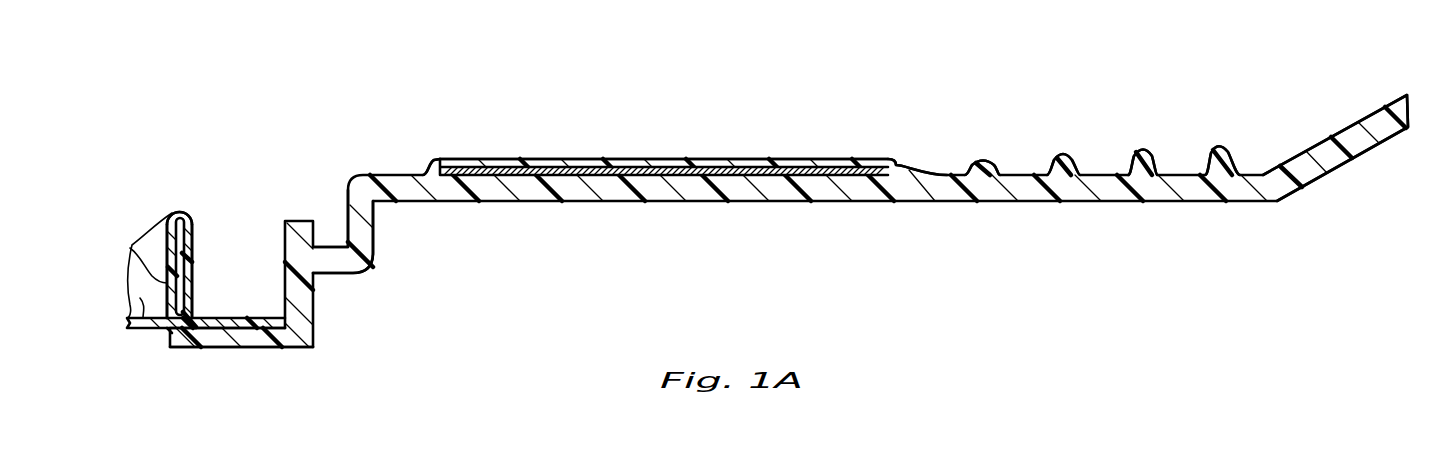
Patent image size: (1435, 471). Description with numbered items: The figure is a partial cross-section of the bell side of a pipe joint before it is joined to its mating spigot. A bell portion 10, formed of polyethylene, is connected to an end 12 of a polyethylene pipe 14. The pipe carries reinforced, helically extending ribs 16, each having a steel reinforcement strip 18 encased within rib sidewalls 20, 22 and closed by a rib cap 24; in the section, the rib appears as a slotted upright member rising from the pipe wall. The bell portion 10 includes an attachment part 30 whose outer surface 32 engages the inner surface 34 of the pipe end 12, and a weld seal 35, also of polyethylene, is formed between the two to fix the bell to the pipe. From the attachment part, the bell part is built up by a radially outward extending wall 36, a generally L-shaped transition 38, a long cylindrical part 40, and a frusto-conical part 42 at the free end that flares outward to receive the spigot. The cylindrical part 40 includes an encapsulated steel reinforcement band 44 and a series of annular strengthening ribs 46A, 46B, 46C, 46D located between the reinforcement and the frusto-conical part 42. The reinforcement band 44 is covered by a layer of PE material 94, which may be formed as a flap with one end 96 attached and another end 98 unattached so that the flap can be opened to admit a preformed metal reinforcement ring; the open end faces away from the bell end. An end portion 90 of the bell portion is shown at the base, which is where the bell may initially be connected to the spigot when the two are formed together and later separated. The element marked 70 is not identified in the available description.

The bell portion 10 is at (362, 98).
The end of pipe 12 is at (251, 303).
The polyethylene pipe 14 is at (140, 298).
The helically extending rib 16 is at (184, 182).
The steel reinforcement strip 18 is at (132, 245).
The rib sidewall 20 is at (192, 240).
The rib sidewall 22 is at (167, 240).
The rib cap 24 is at (177, 213).
The attachment part 30 is at (276, 375).
The outer surface 32 is at (285, 232).
The inner surface 34 is at (223, 330).
The weld seal 35 is at (167, 333).
The radially outward extending wall 36 is at (334, 295).
The L-shaped transition 38 is at (393, 256).
The cylindrical part 40 is at (678, 223).
The frusto-conical part 42 is at (1368, 93).
The steel reinforcement band 44 is at (706, 160).
The annular strengthening rib 46A is at (983, 162).
The annular strengthening rib 46B is at (1063, 152).
The annular strengthening rib 46C is at (1143, 148).
The annular strengthening rib 46D is at (1218, 146).
The component 70 is at (690, 470).
The end portion of bell portion 90 is at (175, 347).
The layer of PE material 94 is at (630, 160).
The attached end of flap 96 is at (890, 160).
The unattached end of flap 98 is at (430, 160).